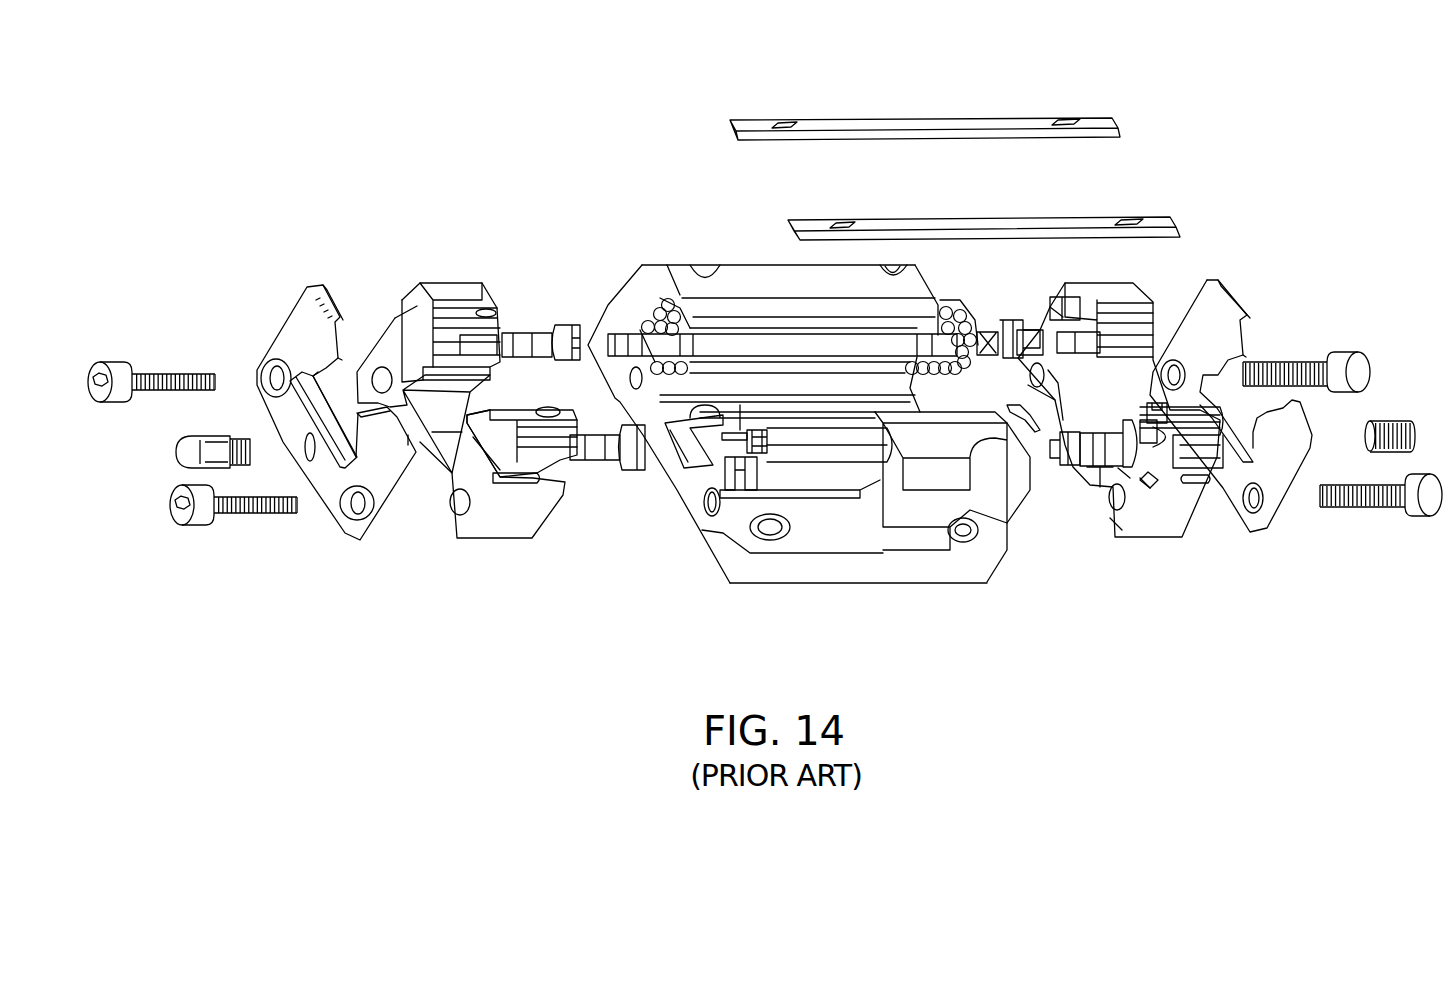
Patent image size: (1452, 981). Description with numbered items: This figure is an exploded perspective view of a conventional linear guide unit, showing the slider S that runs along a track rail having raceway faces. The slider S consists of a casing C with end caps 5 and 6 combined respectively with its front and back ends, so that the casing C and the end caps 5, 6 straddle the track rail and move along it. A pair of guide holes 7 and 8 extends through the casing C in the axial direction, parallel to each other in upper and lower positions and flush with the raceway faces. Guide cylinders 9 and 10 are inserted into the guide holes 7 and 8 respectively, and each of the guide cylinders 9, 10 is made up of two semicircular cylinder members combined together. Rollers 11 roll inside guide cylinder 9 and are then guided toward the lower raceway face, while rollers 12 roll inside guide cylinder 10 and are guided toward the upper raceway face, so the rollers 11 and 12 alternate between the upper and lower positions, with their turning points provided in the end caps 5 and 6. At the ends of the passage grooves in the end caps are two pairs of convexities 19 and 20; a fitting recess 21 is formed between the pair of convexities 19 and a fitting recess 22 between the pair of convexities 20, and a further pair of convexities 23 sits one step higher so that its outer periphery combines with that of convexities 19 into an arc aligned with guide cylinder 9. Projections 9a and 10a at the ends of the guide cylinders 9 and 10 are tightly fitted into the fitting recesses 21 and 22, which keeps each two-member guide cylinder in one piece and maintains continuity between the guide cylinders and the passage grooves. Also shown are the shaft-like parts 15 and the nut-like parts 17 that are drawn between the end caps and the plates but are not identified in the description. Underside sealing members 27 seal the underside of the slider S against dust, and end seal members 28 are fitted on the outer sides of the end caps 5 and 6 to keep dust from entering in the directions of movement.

The end cap 5 is at (1163, 527).
The end cap 6 is at (507, 533).
The guide hole 7 is at (897, 492).
The guide hole 8 is at (850, 465).
The guide cylinder 9 is at (832, 462).
The projection 9a is at (745, 490).
The guide cylinder 10 is at (790, 485).
The projection 10a is at (705, 530).
The rollers 11 is at (655, 308).
The rollers 12 is at (632, 347).
The motor shaft 15 is at (538, 342).
The coupling nut 17 is at (565, 327).
The convexities 19 is at (1110, 523).
The convexities 20 is at (1162, 400).
The fitting recess 21 is at (1123, 473).
The fitting recess 22 is at (1187, 433).
The convexities 23 is at (1145, 494).
The underside sealing members 27 is at (935, 230).
The end seal members 28 is at (330, 497).
The casing C is at (962, 592).
The slider S is at (1040, 545).